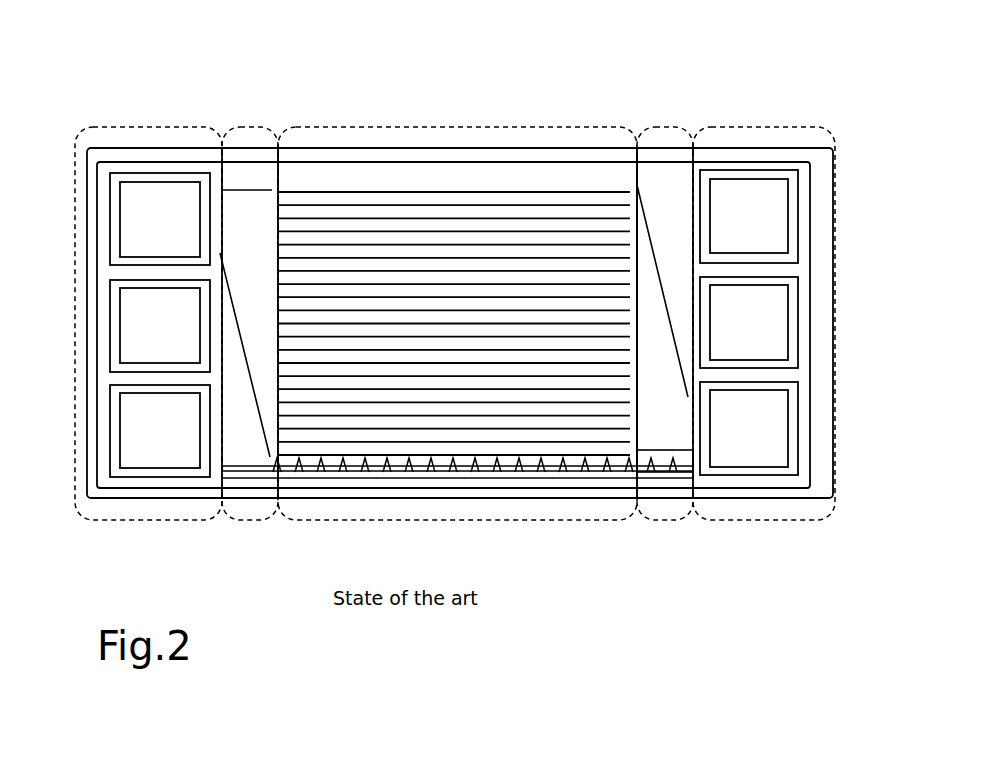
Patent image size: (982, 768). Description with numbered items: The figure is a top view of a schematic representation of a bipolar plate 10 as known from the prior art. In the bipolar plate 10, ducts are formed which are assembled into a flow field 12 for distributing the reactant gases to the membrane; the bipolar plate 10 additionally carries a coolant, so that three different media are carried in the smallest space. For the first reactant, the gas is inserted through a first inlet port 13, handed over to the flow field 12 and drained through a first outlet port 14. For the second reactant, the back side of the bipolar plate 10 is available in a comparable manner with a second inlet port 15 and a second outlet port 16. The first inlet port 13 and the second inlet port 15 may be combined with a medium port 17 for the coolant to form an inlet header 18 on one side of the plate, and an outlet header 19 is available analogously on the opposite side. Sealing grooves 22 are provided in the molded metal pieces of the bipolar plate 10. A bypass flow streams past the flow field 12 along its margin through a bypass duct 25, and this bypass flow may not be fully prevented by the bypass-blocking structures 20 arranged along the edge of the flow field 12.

The bipolar plate 10 is at (797, 97).
The flow field 12 is at (457, 420).
The first inlet port 13 is at (138, 197).
The first outlet port 14 is at (765, 447).
The second inlet port 15 is at (165, 457).
The second outlet port 16 is at (733, 200).
The medium port 17 is at (163, 303).
The inlet header 18 is at (133, 528).
The outlet header 19 is at (798, 518).
The bypass-blocking structures 20 is at (473, 462).
The sealing grooves 22 is at (110, 217).
The bypass duct 25 is at (543, 465).